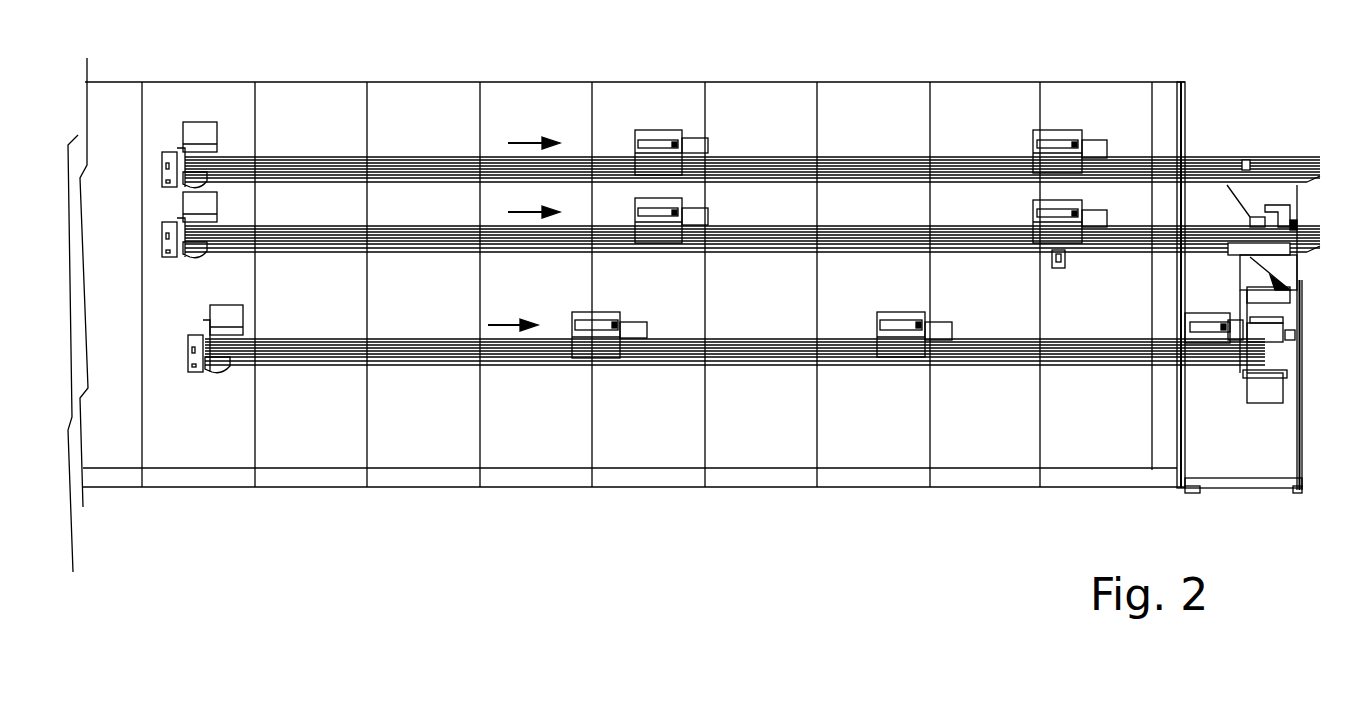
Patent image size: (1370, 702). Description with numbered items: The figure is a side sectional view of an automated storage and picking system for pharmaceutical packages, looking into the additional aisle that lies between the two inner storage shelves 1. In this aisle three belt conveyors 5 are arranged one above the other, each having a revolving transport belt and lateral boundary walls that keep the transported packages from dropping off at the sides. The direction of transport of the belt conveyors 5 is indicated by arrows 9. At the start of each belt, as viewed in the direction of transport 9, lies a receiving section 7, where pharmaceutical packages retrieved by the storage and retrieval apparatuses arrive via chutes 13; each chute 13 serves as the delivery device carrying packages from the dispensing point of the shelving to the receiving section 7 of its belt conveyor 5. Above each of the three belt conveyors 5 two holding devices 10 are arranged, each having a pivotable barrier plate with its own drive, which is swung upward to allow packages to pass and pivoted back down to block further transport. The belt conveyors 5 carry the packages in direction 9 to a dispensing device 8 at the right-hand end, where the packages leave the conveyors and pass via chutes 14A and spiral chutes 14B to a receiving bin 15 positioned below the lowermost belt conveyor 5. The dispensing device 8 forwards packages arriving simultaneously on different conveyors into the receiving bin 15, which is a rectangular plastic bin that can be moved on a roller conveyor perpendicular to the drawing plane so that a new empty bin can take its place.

The storage shelf 1 is at (852, 98).
The belt conveyor 5 is at (417, 228).
The receiving section 7 is at (203, 172).
The dispensing device 8 is at (1281, 125).
The direction of transport 9 is at (523, 140).
The holding device 10 is at (655, 200).
The chute 13 is at (205, 200).
The chute 14A is at (1278, 195).
The spiral chute 14B is at (1285, 268).
The receiving bin 15 is at (1268, 390).